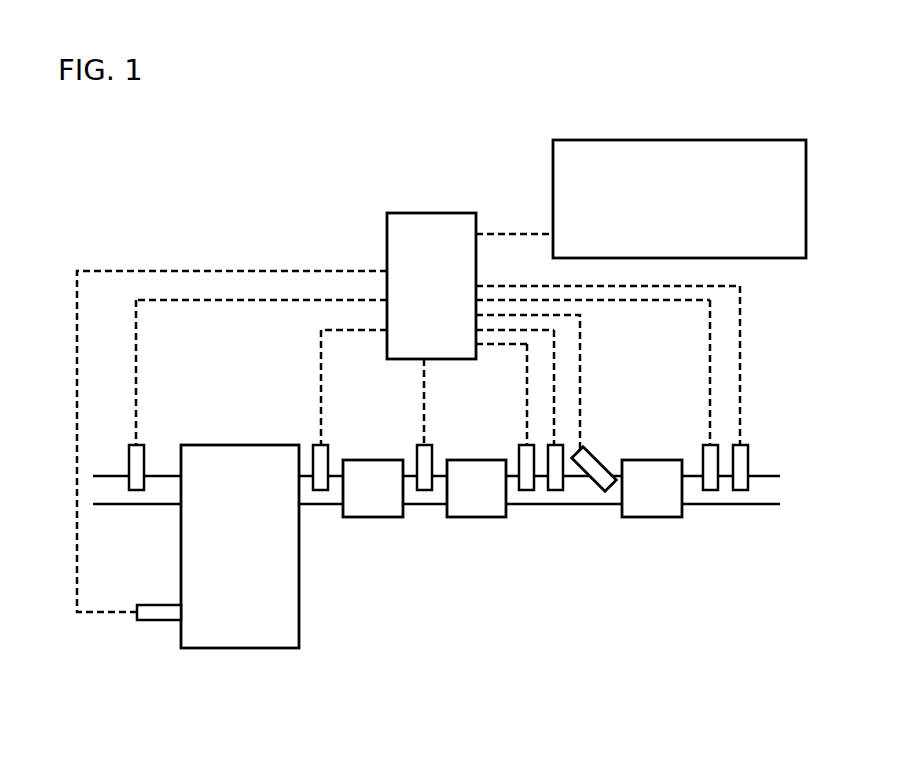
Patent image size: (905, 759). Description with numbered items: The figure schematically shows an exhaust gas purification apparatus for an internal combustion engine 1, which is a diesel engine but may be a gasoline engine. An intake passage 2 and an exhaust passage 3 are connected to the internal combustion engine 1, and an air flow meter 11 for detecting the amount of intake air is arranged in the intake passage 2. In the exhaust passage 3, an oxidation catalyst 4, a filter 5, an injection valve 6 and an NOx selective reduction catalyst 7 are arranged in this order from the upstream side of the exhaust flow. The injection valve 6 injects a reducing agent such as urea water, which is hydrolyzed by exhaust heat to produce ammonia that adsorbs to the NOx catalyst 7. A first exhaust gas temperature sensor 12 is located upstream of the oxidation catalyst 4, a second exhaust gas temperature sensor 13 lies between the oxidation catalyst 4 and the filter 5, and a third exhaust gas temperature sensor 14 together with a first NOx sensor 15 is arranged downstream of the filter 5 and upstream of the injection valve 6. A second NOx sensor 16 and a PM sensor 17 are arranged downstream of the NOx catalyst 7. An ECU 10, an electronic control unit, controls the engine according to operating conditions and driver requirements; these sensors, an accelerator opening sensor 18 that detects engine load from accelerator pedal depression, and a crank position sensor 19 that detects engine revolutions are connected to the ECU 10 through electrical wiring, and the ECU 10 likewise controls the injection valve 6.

The internal combustion engine 1 is at (237, 648).
The intake passage 2 is at (133, 504).
The exhaust passage 3 is at (423, 504).
The oxidation catalyst 4 is at (372, 517).
The filter 5 is at (475, 517).
The injection valve 6 is at (593, 452).
The NOx selective reduction catalyst 7 is at (650, 517).
The ECU 10 is at (387, 240).
The air flow meter 11 is at (146, 452).
The first exhaust gas temperature sensor 12 is at (330, 452).
The second exhaust gas temperature sensor 13 is at (415, 450).
The third exhaust gas temperature sensor 14 is at (517, 450).
The first NOx sensor 15 is at (558, 490).
The second NOx sensor 16 is at (702, 452).
The PM sensor 17 is at (747, 452).
The accelerator opening sensor 18 is at (778, 258).
The crank position sensor 19 is at (158, 620).